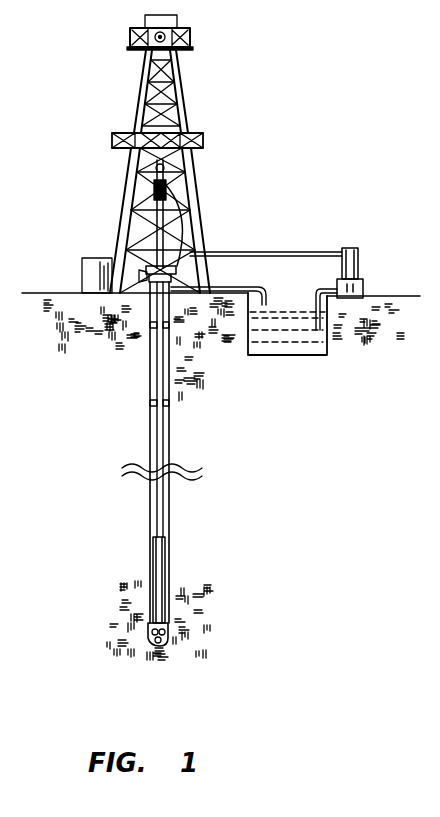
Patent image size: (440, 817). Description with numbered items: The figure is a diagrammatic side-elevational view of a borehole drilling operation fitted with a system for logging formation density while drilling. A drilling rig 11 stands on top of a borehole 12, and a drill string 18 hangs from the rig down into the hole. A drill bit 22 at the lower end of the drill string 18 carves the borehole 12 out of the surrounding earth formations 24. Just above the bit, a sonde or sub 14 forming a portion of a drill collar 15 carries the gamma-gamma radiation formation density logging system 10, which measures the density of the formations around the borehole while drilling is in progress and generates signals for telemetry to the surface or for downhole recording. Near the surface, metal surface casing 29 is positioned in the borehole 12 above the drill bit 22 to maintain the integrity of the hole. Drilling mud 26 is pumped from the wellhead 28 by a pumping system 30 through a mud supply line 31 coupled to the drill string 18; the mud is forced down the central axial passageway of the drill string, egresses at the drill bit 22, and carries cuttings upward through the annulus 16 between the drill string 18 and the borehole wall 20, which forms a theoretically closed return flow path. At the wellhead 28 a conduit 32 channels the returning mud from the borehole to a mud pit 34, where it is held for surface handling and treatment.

The formation density logging system 10 is at (198, 580).
The drilling rig 11 is at (188, 82).
The borehole 12 is at (149, 380).
The sonde or sub 14 is at (168, 546).
The drill collar 15 is at (157, 590).
The annulus 16 is at (166, 443).
The drill string 18 is at (166, 226).
The borehole wall 20 is at (150, 518).
The drill bit 22 is at (168, 630).
The earth formations 24 is at (158, 664).
The drilling mud 26 is at (282, 350).
The wellhead 28 is at (177, 266).
The metal surface casing 29 is at (155, 320).
The pumping system 30 is at (360, 262).
The mud supply line 31 is at (300, 251).
The conduit 32 is at (268, 290).
The mud pit 34 is at (326, 350).